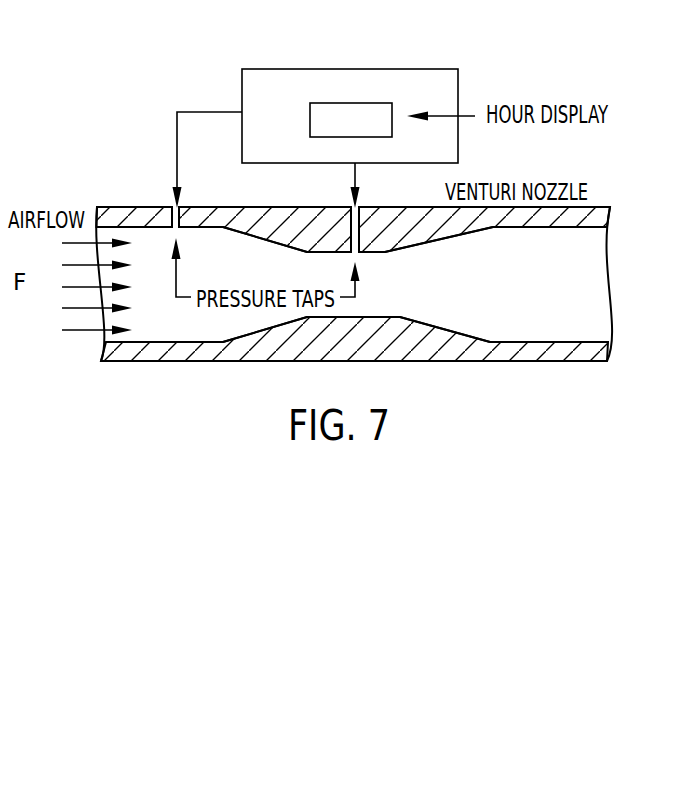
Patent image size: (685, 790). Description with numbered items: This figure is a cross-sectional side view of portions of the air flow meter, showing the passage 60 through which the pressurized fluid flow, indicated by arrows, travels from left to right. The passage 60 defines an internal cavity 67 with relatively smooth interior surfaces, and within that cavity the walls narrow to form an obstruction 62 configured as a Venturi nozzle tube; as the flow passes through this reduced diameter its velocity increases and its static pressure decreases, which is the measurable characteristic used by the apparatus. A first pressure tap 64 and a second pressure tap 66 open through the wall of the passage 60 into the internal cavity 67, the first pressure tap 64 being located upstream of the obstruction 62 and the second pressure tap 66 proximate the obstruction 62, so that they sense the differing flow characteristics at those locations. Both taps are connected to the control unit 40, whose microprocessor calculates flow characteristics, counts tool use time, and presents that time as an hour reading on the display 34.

The display 34 is at (380, 102).
The control unit 40 is at (432, 67).
The passage 60 is at (547, 355).
The obstruction 62 is at (458, 303).
The first pressure tap 64 is at (170, 200).
The second pressure tap 66 is at (352, 203).
The internal cavity 67 is at (587, 285).